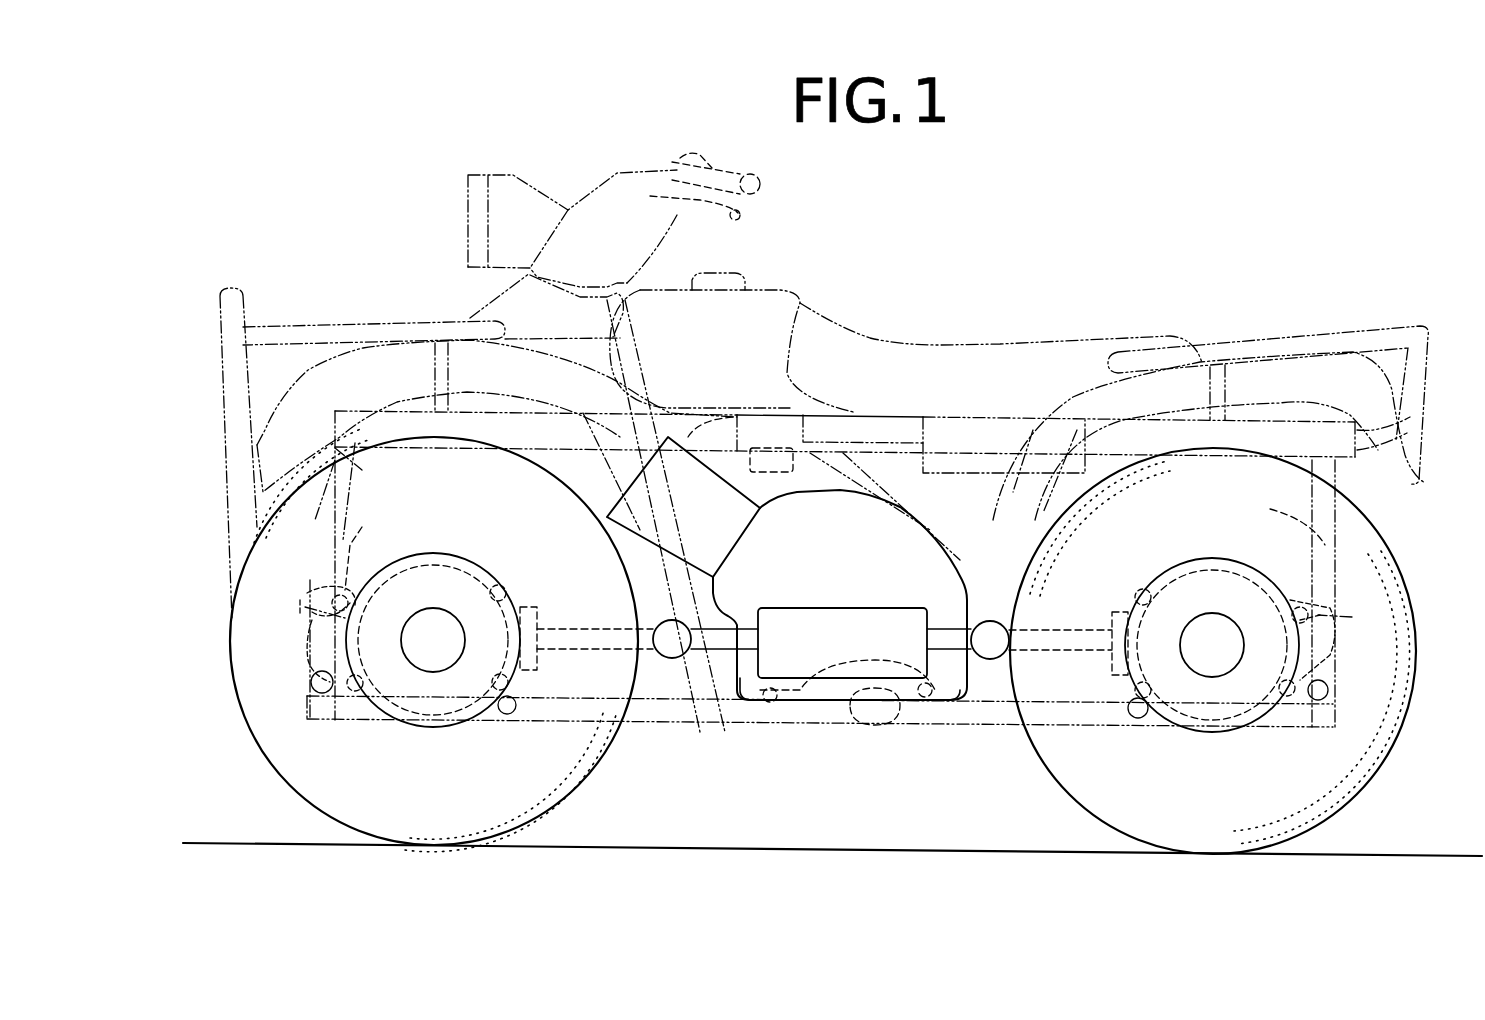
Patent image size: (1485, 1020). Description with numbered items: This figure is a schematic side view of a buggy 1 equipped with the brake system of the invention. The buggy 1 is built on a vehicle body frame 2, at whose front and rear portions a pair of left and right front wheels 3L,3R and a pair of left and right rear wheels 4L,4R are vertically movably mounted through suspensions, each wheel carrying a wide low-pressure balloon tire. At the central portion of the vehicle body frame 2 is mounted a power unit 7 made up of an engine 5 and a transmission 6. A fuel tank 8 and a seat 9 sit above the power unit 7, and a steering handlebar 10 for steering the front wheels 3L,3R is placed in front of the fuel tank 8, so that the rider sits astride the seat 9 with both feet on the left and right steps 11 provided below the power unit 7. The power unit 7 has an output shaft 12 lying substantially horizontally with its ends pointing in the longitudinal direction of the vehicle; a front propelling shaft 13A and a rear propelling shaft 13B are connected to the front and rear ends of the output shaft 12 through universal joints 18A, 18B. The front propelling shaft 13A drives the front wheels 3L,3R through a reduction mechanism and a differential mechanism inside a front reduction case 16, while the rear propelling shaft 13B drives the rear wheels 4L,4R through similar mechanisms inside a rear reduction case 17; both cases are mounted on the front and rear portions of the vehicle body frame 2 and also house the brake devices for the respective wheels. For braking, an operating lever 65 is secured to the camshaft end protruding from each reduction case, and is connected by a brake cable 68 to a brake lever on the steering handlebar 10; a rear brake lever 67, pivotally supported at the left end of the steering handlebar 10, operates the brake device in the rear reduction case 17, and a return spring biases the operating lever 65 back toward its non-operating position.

The buggy 1 is at (1050, 254).
The vehicle body frame 2 is at (345, 310).
The left and right front wheels 3L,3R is at (537, 772).
The left and right rear wheels 4L,4R is at (1110, 797).
The engine 5 is at (705, 491).
The transmission 6 is at (905, 555).
The power unit 7 is at (983, 292).
The fuel tank 8 is at (773, 295).
The seat 9 is at (1050, 358).
The steering handlebar 10 is at (616, 174).
The steps 11 is at (842, 710).
The output shaft 12 is at (725, 634).
The front propelling shaft 13A is at (565, 622).
The rear propelling shaft 13B is at (1058, 622).
The front reduction case 16 is at (435, 566).
The rear reduction case 17 is at (1215, 578).
The universal joint 18A is at (670, 640).
The universal joint 18B is at (1008, 642).
The operating lever 65 is at (305, 607).
The rear brake lever 67 is at (718, 207).
The brake cable 68 is at (400, 540).